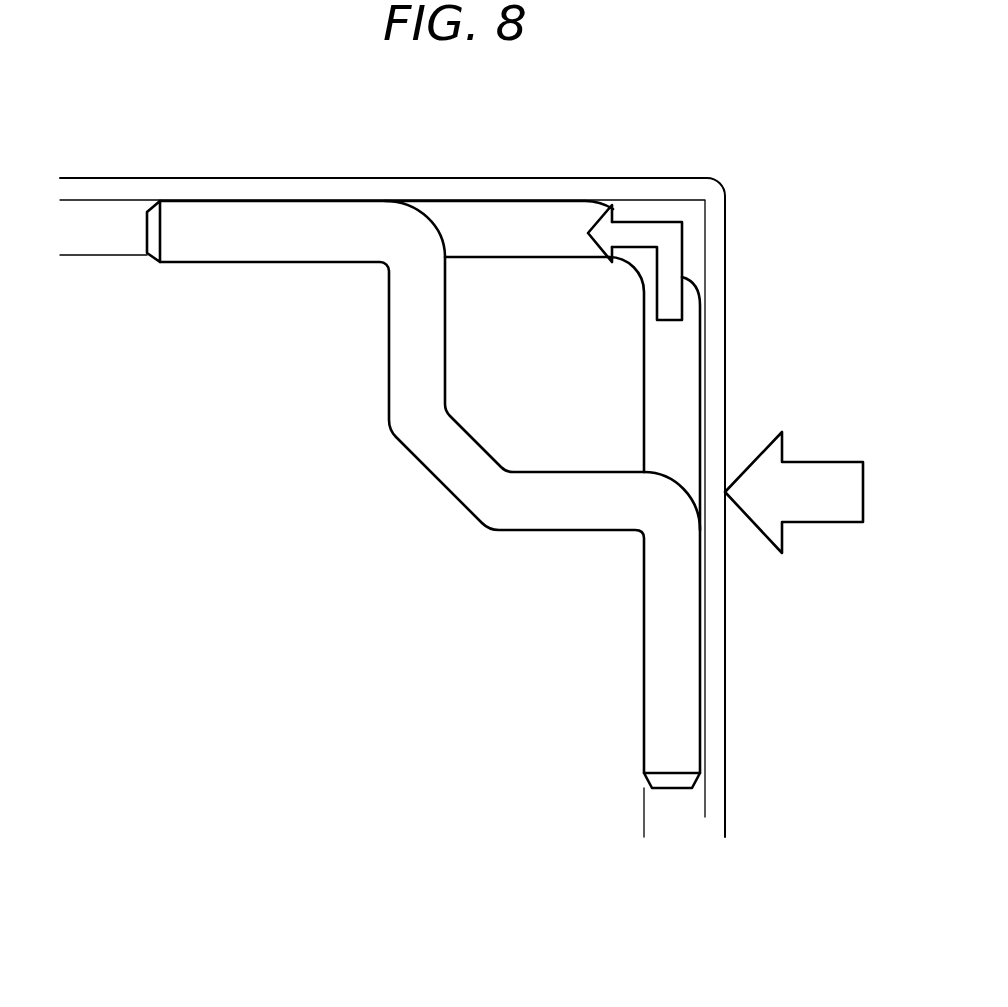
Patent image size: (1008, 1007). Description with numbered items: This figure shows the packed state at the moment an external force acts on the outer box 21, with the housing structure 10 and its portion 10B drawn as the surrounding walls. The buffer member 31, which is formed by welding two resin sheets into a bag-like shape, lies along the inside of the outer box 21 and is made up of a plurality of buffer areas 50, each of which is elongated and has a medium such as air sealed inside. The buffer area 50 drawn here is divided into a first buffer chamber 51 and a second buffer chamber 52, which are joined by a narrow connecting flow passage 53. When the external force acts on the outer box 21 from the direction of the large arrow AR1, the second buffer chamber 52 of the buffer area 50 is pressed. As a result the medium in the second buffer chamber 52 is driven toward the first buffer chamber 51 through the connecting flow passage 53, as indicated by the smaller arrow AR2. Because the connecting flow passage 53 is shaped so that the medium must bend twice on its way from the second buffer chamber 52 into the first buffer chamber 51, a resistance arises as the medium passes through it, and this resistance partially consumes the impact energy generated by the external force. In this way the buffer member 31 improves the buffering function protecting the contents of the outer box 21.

The housing 10 is at (382, 481).
The housing second portion 10B is at (113, 293).
The outer box 21 is at (316, 178).
The buffer member 31 is at (723, 353).
The buffer area 50 is at (463, 460).
The first buffer chamber 51 is at (500, 230).
The second buffer chamber 52 is at (682, 412).
The connecting flow passage 53 is at (640, 265).
The arrow AR1 is at (820, 522).
The arrow AR2 is at (645, 221).